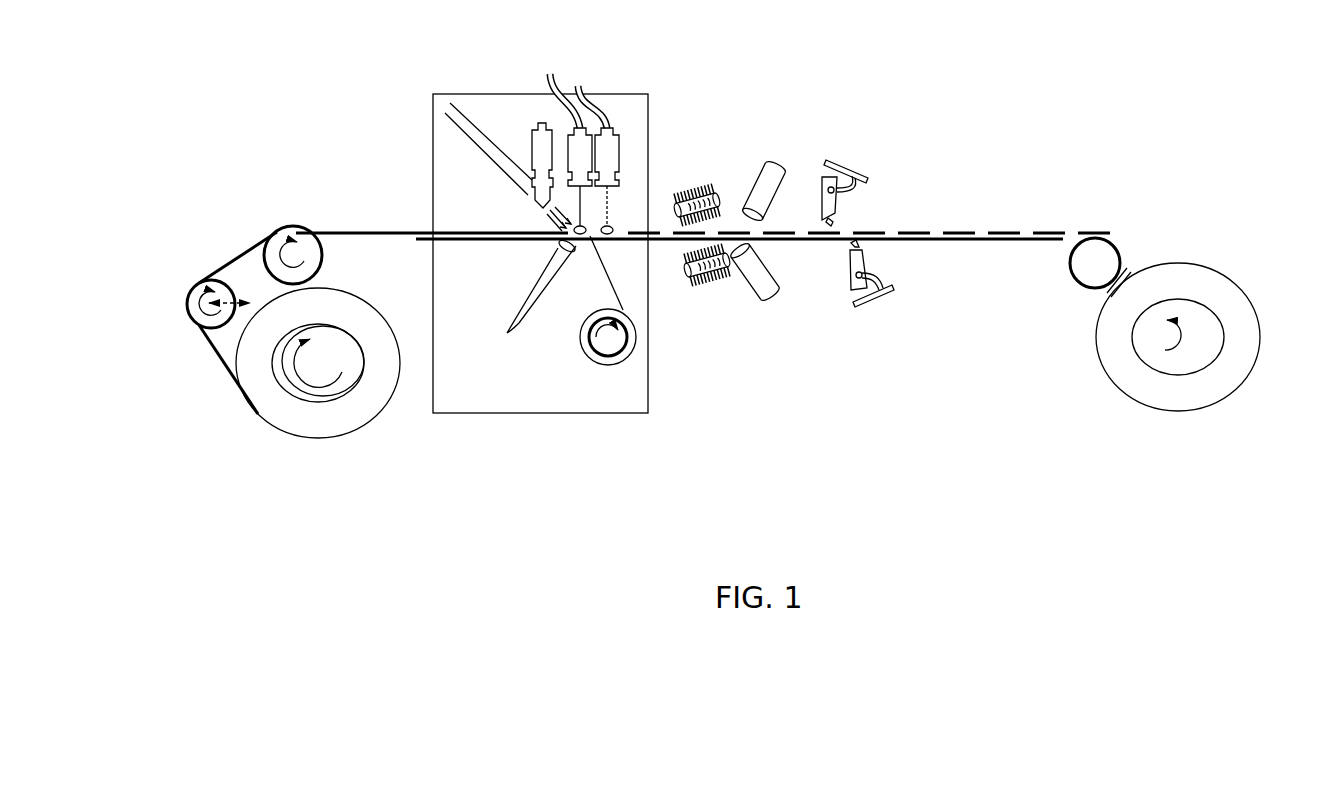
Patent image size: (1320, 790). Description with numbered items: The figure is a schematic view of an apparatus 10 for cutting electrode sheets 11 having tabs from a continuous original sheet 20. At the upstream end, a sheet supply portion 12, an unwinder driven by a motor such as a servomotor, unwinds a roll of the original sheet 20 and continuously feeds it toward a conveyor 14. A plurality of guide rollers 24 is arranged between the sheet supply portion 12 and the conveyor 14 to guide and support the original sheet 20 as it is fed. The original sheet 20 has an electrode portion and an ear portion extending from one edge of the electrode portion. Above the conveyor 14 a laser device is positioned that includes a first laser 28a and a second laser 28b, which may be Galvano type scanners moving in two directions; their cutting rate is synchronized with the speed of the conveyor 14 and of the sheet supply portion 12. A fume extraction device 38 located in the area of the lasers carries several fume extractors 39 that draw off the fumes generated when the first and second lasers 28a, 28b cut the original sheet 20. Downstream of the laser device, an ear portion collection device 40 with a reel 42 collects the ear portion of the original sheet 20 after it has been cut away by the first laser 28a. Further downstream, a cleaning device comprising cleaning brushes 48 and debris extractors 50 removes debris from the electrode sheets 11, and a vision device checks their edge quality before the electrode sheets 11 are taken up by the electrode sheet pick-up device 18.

The apparatus 10 is at (330, 47).
The electrode sheets 11 is at (915, 230).
The sheet supply portion 12 is at (362, 425).
The conveyor 14 is at (808, 245).
The electrode sheet pick-up device 18 is at (1097, 385).
The original sheet 20 is at (375, 232).
The guide rollers 24 is at (282, 228).
The first laser 28a is at (552, 92).
The second laser 28b is at (613, 122).
The fume extraction device 38 is at (442, 110).
The fume extractors 39 is at (490, 135).
The ear portion collection device 40 is at (610, 370).
The reel 42 is at (628, 350).
The cleaning brushes 48 is at (677, 200).
The debris extractors 50 is at (770, 167).